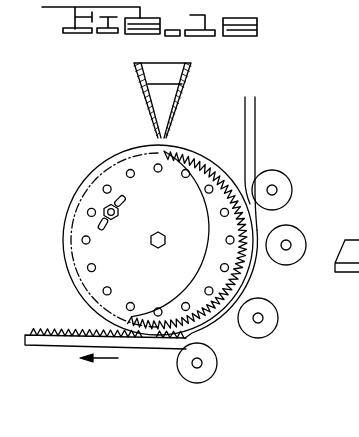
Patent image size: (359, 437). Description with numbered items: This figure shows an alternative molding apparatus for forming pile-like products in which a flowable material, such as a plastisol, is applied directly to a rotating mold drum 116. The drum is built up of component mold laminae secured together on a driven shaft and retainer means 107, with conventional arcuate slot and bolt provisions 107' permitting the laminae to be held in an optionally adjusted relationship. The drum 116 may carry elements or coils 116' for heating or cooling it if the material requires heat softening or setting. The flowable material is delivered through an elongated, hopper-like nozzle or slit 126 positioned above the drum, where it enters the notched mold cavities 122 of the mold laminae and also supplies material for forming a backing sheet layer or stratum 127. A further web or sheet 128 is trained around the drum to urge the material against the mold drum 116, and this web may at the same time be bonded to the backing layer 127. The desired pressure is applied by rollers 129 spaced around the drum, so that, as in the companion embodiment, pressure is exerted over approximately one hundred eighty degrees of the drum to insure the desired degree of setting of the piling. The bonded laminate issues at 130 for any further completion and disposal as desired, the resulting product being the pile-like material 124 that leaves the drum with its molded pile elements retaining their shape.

The mold drum 116 is at (131, 240).
The heating or cooling elements or coils 116' is at (146, 260).
The notched mold cavities 122 is at (213, 175).
The pile-like material 124 is at (65, 341).
The hopper-like nozzle or slit 126 is at (175, 117).
The backing sheet layer or stratum 127 is at (211, 139).
The web or sheet 128 is at (252, 153).
The rollers 129 is at (277, 190).
The issuing point of bonded laminate 130 is at (145, 357).
The driven shaft and retainer means 107 is at (171, 254).
The arcuate slot and bolt provisions 107' is at (139, 213).